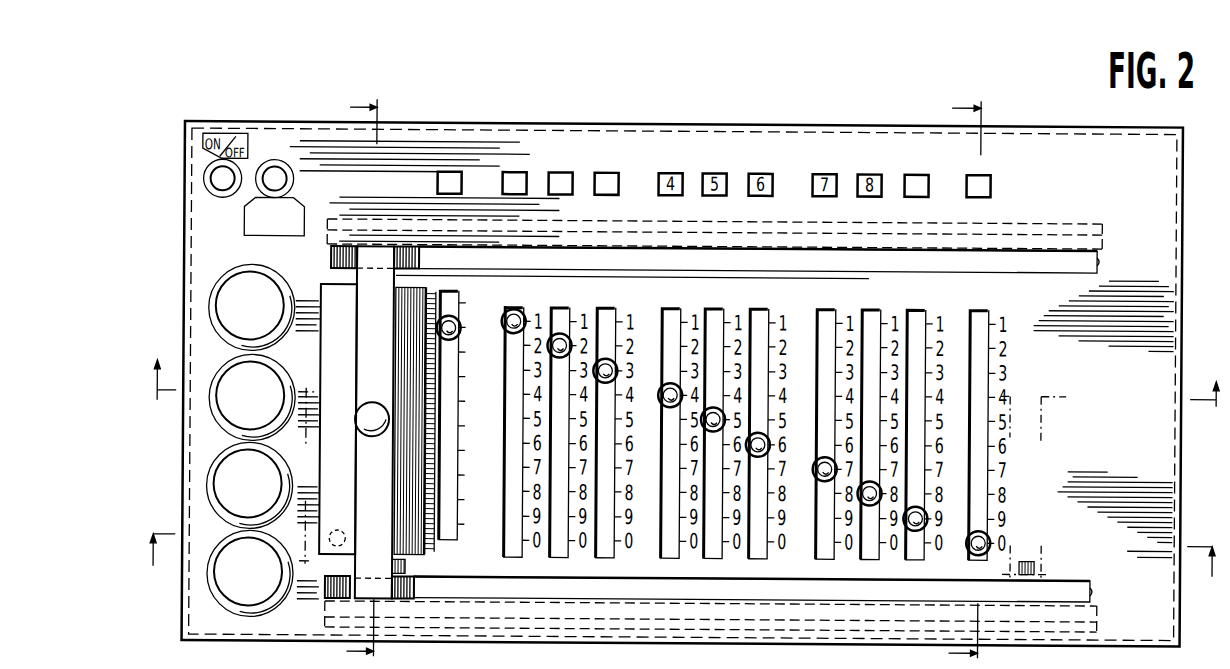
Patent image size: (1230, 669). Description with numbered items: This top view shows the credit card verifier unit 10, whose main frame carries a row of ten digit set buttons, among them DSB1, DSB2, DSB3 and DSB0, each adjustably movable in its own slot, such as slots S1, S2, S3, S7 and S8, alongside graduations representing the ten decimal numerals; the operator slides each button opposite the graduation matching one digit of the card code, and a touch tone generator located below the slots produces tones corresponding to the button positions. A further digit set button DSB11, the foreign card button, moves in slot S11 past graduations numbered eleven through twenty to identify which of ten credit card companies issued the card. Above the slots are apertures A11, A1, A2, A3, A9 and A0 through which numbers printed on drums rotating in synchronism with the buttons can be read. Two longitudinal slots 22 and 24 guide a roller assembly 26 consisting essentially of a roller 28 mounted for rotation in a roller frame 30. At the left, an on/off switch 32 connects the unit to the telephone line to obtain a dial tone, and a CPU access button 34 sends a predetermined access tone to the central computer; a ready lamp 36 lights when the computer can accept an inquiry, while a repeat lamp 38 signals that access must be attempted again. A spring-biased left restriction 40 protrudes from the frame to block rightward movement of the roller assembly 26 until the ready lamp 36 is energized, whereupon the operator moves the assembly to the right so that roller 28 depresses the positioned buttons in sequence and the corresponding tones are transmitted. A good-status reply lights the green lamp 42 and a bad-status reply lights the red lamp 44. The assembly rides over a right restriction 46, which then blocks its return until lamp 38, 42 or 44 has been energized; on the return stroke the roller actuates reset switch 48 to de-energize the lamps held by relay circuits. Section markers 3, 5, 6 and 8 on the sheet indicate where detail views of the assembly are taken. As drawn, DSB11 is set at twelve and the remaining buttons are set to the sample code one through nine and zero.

The credit card verifier unit 10 is at (682, 395).
The longitudinal slot 22 is at (1100, 258).
The longitudinal slot 24 is at (1095, 586).
The roller assembly 26 is at (333, 280).
The roller 28 is at (323, 374).
The roller frame 30 is at (360, 458).
The on/off switch 32 is at (222, 189).
The CPU access button 34 is at (282, 174).
The ready lamp 36 is at (232, 276).
The repeat lamp 38 is at (229, 540).
The left restriction 40 is at (408, 565).
The green lamp 42 is at (229, 364).
The red lamp 44 is at (209, 484).
The right restriction 46 is at (1038, 564).
The reset switch 48 is at (341, 529).
The section line 3- 3 is at (683, 569).
The section line 5- 5 is at (971, 383).
The section line 6- 6 is at (368, 381).
The section line 8- 8 is at (684, 465).
The aperture A11 is at (445, 170).
The aperture A1 is at (512, 170).
The aperture A2 is at (557, 170).
The aperture A3 is at (603, 170).
The aperture A9 is at (913, 170).
The aperture A0 is at (983, 170).
The slot S11 is at (452, 539).
The slot S1 is at (513, 556).
The slot S2 is at (559, 556).
The slot S3 is at (603, 556).
The slot S7 is at (823, 554).
The slot S8 is at (871, 554).
The foreign card button DSB11 is at (461, 333).
The digit set button DSB1 is at (516, 307).
The digit set button DSB2 is at (558, 331).
The digit set button DSB3 is at (607, 355).
The digit set button DSB0 is at (979, 550).